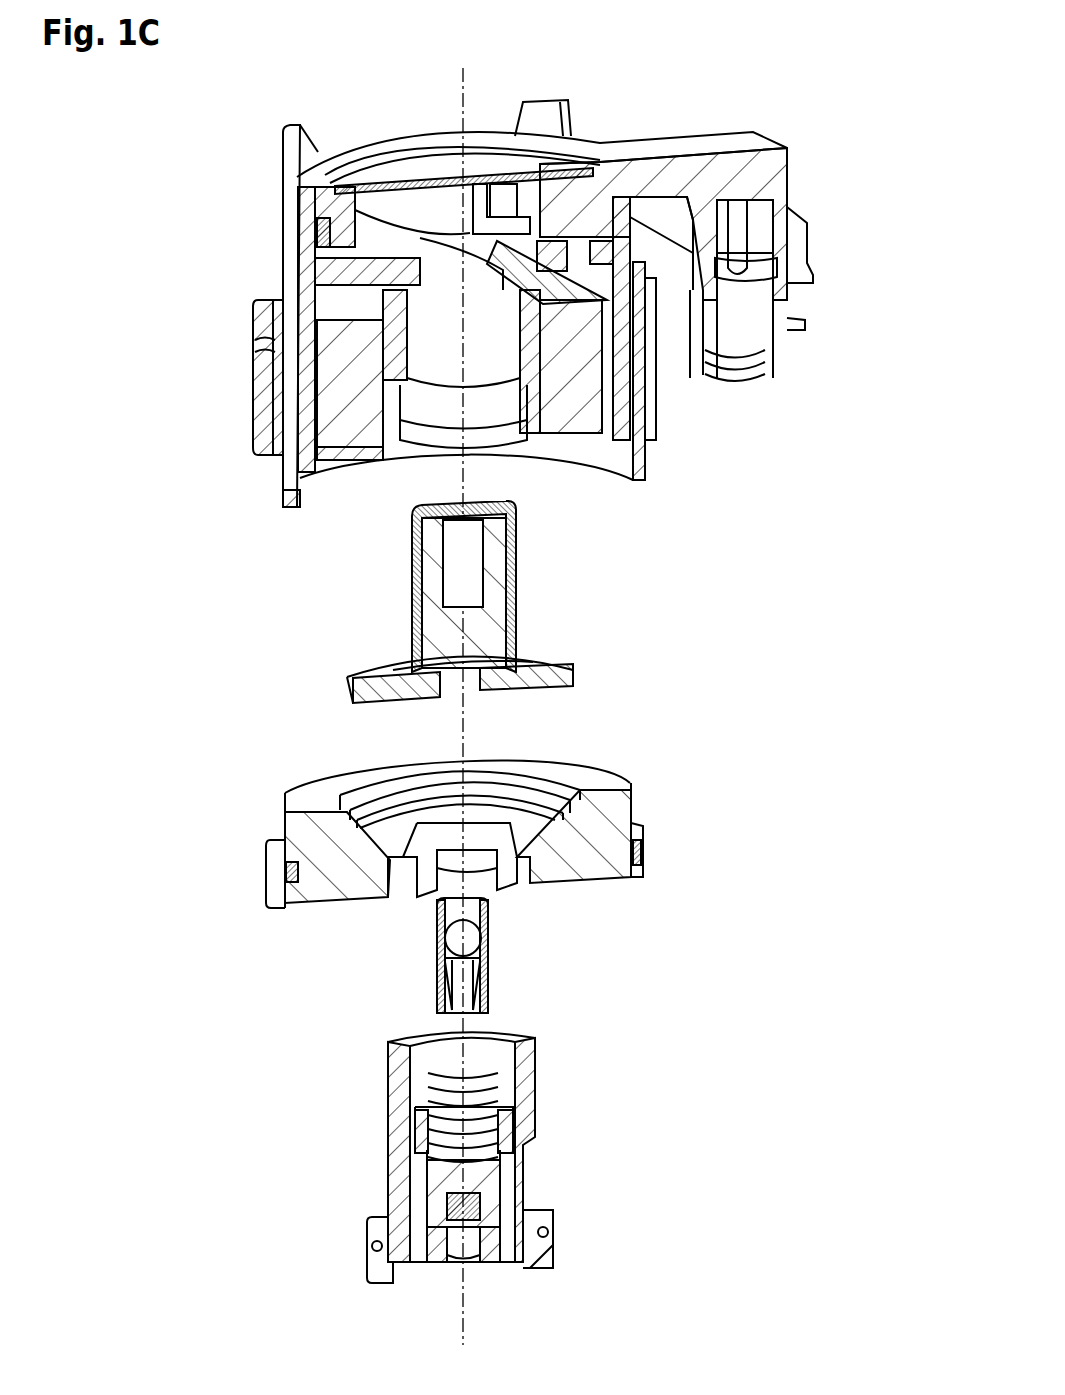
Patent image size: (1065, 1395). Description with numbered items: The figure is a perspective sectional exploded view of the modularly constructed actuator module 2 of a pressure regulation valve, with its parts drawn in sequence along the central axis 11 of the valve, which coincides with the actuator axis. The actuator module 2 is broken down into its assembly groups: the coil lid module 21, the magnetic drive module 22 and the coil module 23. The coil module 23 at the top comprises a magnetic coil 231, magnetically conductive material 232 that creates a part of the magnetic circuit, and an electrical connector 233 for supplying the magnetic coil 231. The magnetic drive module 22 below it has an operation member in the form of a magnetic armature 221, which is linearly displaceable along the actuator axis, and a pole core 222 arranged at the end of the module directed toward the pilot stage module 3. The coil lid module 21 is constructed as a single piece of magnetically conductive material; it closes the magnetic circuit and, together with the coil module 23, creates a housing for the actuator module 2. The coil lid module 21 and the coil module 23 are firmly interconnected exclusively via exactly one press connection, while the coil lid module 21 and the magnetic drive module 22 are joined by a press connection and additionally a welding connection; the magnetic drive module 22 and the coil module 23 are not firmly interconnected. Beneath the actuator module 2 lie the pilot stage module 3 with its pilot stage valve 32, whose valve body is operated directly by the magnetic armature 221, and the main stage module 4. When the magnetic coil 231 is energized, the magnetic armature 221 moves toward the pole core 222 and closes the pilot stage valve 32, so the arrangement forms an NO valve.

The actuator module 2 is at (130, 735).
The central axis 11 is at (462, 110).
The coil module 23 is at (268, 201).
The magnetically conductive material 232 is at (307, 243).
The electrical connector 233 is at (760, 237).
The magnetic coil 231 is at (587, 397).
The magnetic drive module 22 is at (530, 602).
The magnetic armature 221 is at (487, 618).
The pole core 222 is at (555, 677).
The coil lid module 21 is at (688, 812).
The pilot stage module 3 is at (556, 955).
The pilot stage valve 32 is at (528, 956).
The main stage module 4 is at (598, 1138).